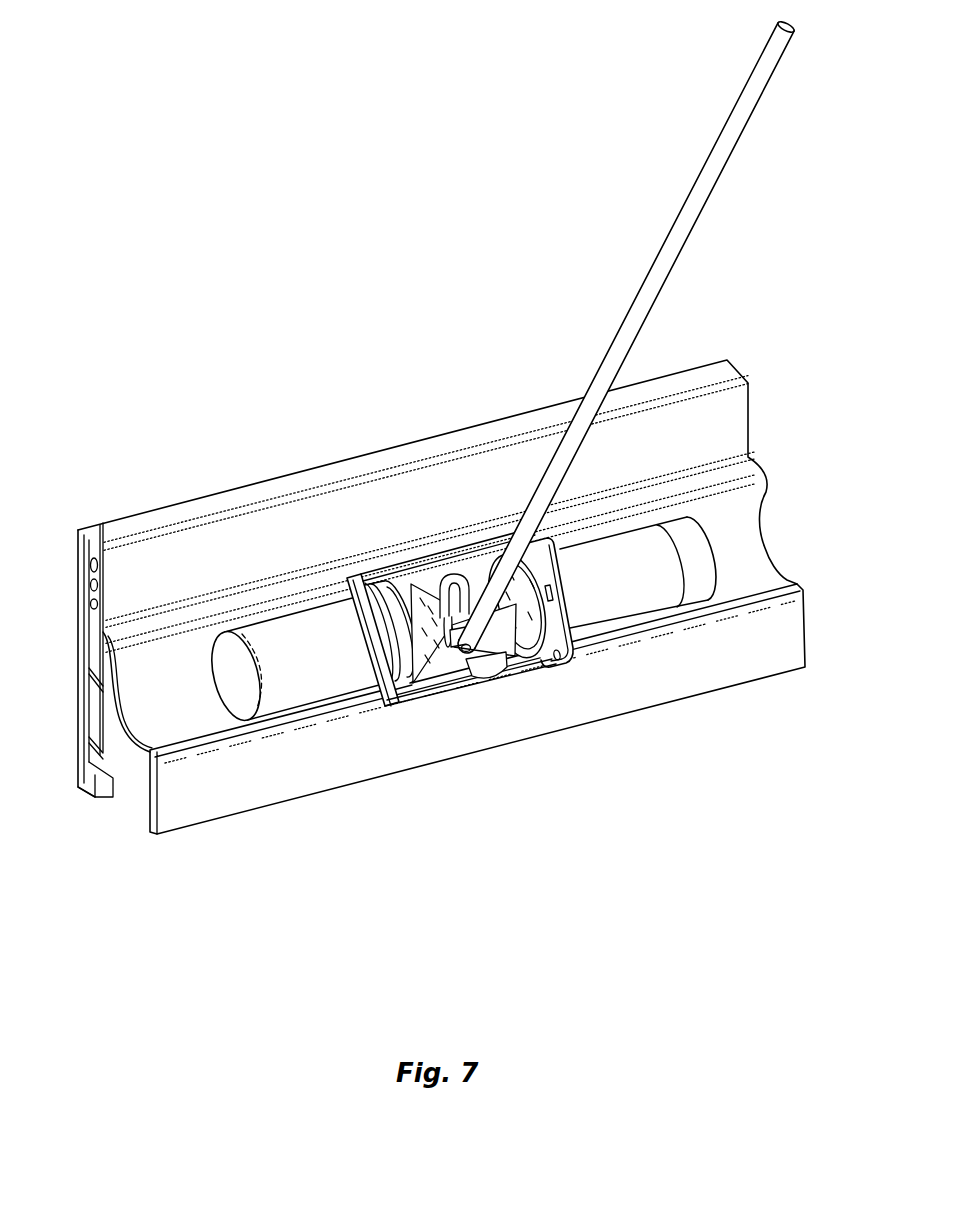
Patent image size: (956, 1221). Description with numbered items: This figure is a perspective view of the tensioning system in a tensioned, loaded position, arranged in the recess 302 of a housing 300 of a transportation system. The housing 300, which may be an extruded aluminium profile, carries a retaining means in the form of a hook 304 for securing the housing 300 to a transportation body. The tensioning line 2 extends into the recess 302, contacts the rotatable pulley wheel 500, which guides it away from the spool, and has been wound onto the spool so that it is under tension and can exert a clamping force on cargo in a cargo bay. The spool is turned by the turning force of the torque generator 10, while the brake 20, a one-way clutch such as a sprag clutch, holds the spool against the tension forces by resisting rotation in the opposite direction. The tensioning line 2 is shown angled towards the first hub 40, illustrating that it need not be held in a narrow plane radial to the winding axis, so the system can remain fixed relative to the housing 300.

The tensioning line 2 is at (772, 77).
The torque generator 10 is at (627, 578).
The brake 20 is at (302, 671).
The first hub 40 is at (478, 563).
The housing 300 is at (110, 535).
The recess 302 is at (187, 704).
The hook 304 is at (86, 786).
The rotatable pulley wheel 500 is at (488, 677).